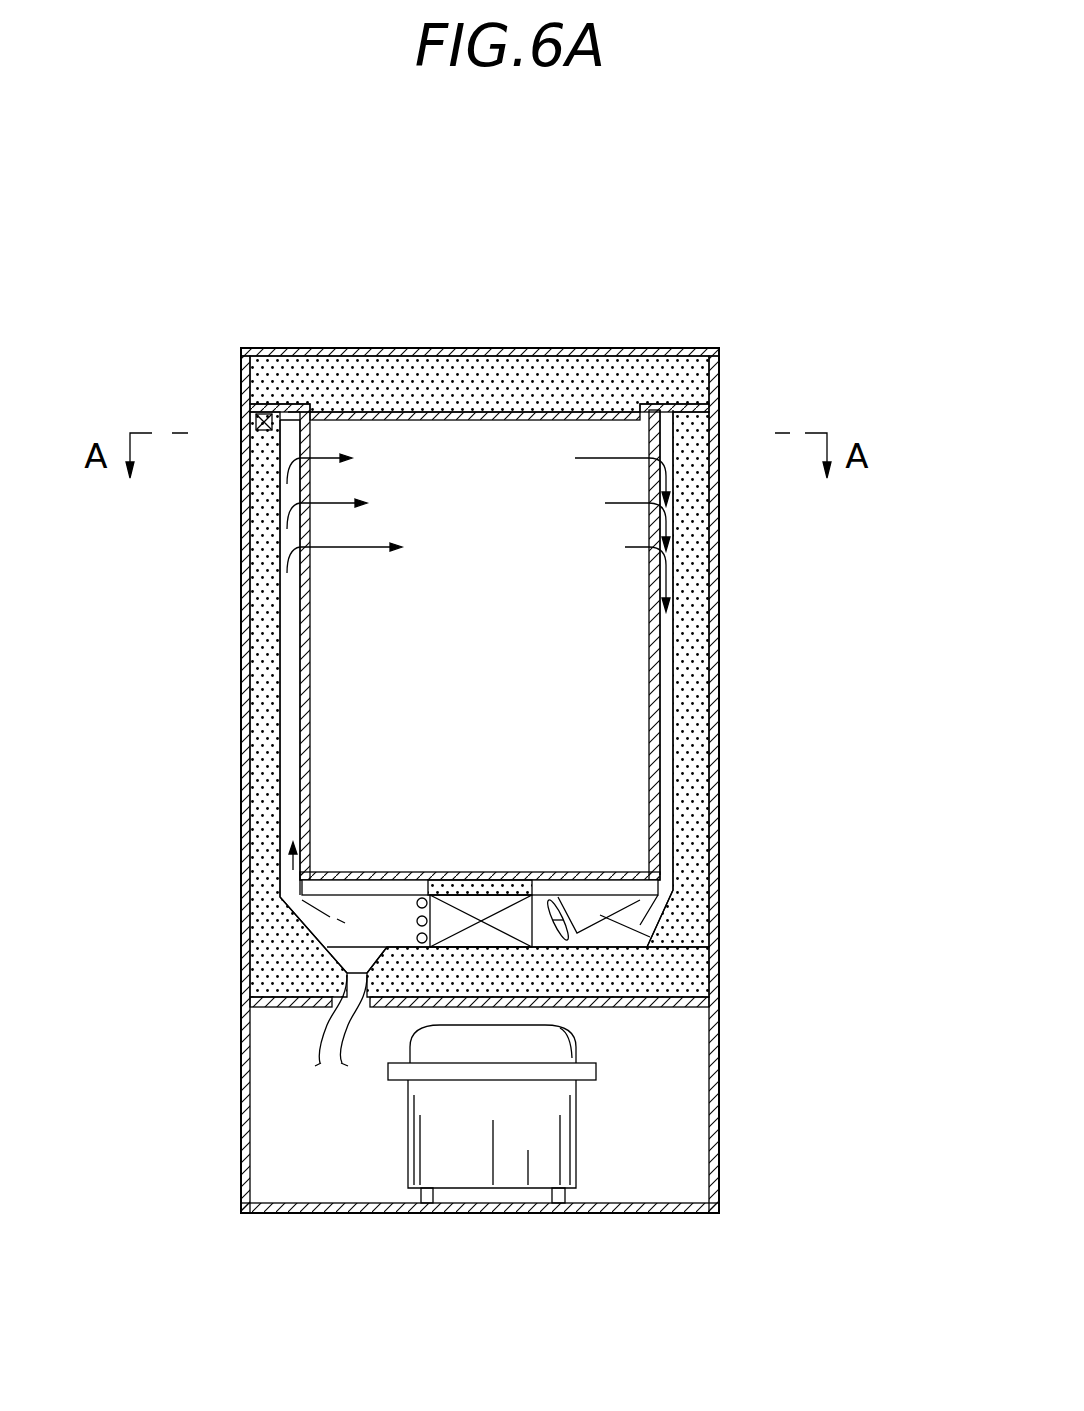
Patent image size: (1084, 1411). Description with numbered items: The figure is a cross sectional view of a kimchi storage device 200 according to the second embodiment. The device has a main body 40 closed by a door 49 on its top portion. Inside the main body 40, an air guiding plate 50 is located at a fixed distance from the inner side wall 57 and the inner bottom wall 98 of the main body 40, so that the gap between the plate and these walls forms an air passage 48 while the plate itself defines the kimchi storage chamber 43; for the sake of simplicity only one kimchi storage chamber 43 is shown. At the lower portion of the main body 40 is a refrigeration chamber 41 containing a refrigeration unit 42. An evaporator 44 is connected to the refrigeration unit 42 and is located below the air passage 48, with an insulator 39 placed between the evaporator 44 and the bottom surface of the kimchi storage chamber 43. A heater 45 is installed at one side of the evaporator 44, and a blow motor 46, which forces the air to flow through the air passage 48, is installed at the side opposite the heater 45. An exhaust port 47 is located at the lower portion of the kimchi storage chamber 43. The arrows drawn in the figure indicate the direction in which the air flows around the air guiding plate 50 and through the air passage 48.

The kimchi storage device 200 is at (738, 326).
The door 49 is at (372, 376).
The main body 40 is at (488, 452).
The air guiding plate 50 is at (315, 717).
The kimchi storage chamber 43 is at (650, 553).
The air passage 48 is at (663, 717).
The inner side wall 57 is at (698, 818).
The insulator 39 is at (517, 885).
The heater 45 is at (416, 900).
The evaporator 44 is at (480, 898).
The blow motor 46 is at (628, 918).
The exhaust port 47 is at (345, 955).
The inner bottom wall 98 is at (590, 970).
The refrigeration chamber 41 is at (698, 1117).
The refrigeration unit 42 is at (490, 1180).